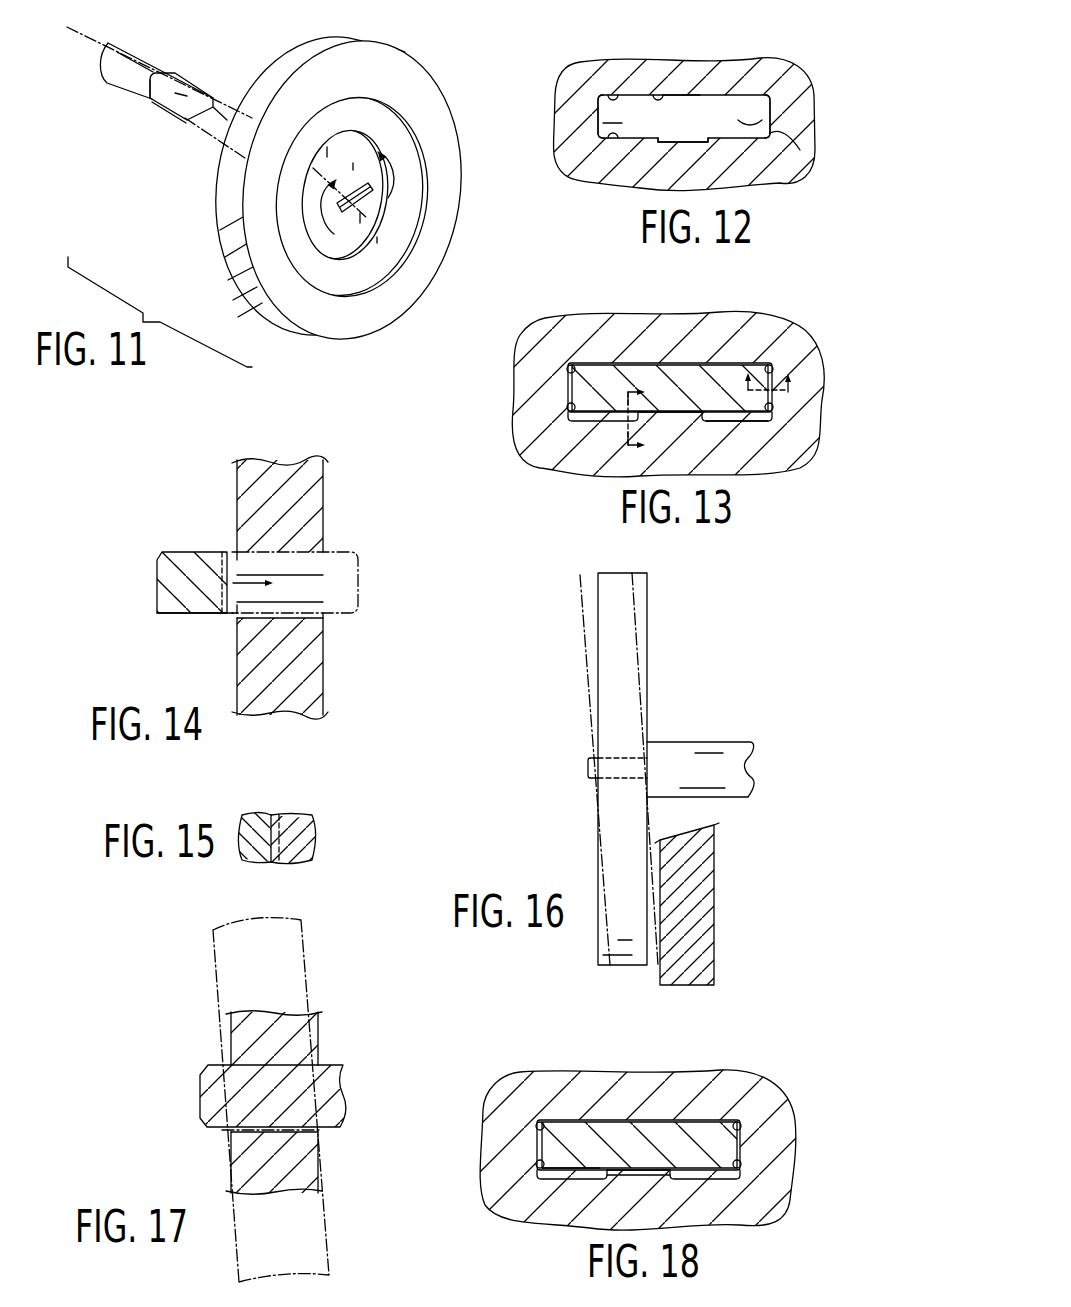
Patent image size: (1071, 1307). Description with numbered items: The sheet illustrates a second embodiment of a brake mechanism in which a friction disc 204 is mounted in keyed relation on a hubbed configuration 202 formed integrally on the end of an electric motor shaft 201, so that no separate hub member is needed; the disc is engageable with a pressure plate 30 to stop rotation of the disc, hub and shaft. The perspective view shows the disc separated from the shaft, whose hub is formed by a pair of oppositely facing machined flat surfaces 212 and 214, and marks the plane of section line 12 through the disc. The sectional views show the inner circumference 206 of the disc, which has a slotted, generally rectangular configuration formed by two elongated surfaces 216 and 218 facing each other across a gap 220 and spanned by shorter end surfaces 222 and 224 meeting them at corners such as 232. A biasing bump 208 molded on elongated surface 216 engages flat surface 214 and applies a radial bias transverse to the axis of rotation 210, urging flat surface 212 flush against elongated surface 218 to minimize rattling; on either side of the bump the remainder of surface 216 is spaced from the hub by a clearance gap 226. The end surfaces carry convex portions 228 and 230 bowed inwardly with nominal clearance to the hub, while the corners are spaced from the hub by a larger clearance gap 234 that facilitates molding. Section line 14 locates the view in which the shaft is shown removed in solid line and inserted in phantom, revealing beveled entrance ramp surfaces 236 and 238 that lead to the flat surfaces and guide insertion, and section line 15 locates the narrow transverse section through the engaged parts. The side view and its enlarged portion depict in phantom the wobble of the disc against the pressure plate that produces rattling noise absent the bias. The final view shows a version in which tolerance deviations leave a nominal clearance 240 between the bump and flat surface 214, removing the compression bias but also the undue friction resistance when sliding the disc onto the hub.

In FIG. 11, the section line 12— 12 is at (351, 185).
In FIG. 13, the section line 14— 14 is at (625, 423).
In FIG. 13, the section line 15— 15 is at (771, 379).
In FIG. 16, the pressure plate 30 is at (714, 960).
In FIG. 11, the electric motor shaft 201 is at (137, 53).
In FIG. 16, the electric motor shaft 201 is at (713, 742).
In FIG. 11, the hubbed configuration 202 is at (200, 82).
In FIG. 13, the hubbed configuration 202 is at (705, 362).
In FIG. 14, the hubbed configuration 202 is at (157, 593).
In FIG. 15, the hubbed configuration 202 is at (250, 828).
In FIG. 16, the hubbed configuration 202 is at (588, 764).
In FIG. 17, the hubbed configuration 202 is at (212, 1102).
In FIG. 18, the hubbed configuration 202 is at (648, 1130).
In FIG. 11, the friction disc 204 is at (413, 52).
In FIG. 12, the friction disc 204 is at (742, 65).
In FIG. 13, the friction disc 204 is at (775, 327).
In FIG. 14, the friction disc 204 is at (290, 462).
In FIG. 15, the friction disc 204 is at (301, 819).
In FIG. 16, the friction disc 204 is at (648, 595).
In FIG. 17, the friction disc 204 is at (320, 1034).
In FIG. 18, the friction disc 204 is at (743, 1083).
In FIG. 12, the inner circumference 206 is at (612, 95).
In FIG. 12, the biasing portion bump 208 is at (668, 138).
In FIG. 13, the biasing portion bump 208 is at (651, 412).
In FIG. 18, the biasing portion bump 208 is at (590, 1225).
In FIG. 11, the axis of rotation 210 is at (78, 36).
In FIG. 11, the flat surface 212 is at (152, 104).
In FIG. 14, the flat surface 212 is at (182, 552).
In FIG. 11, the flat surface 214 is at (170, 122).
In FIG. 14, the flat surface 214 is at (187, 613).
In FIG. 18, the flat surface 214 is at (588, 1168).
In FIG. 12, the elongated surface 216 is at (613, 137).
In FIG. 12, the elongated surface 218 is at (658, 95).
In FIG. 12, the gap 220 is at (675, 100).
In FIG. 12, the end surface 222 is at (600, 112).
In FIG. 12, the end surface 224 is at (772, 108).
In FIG. 13, the clearance gap 226 is at (735, 417).
In FIG. 18, the clearance gap 226 is at (713, 1172).
In FIG. 12, the convex portion 228 is at (634, 122).
In FIG. 12, the convex portion 230 is at (744, 108).
In FIG. 15, the convex portion 230 is at (270, 862).
In FIG. 12, the corner 232 is at (770, 134).
In FIG. 13, the clearance gap 234 is at (773, 414).
In FIG. 14, the beveled entrance ramp surface 236 is at (227, 552).
In FIG. 14, the beveled entrance ramp surface 238 is at (223, 613).
In FIG. 18, the nominal clearance 240 is at (673, 1168).